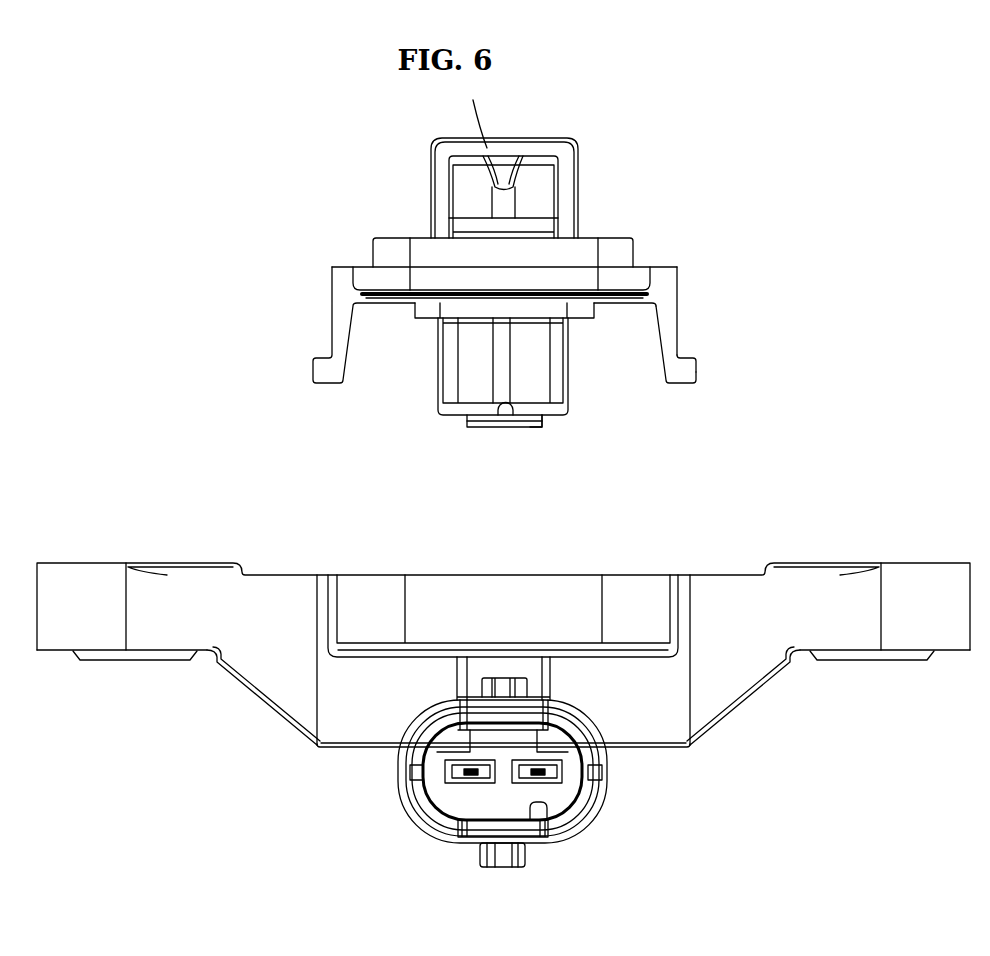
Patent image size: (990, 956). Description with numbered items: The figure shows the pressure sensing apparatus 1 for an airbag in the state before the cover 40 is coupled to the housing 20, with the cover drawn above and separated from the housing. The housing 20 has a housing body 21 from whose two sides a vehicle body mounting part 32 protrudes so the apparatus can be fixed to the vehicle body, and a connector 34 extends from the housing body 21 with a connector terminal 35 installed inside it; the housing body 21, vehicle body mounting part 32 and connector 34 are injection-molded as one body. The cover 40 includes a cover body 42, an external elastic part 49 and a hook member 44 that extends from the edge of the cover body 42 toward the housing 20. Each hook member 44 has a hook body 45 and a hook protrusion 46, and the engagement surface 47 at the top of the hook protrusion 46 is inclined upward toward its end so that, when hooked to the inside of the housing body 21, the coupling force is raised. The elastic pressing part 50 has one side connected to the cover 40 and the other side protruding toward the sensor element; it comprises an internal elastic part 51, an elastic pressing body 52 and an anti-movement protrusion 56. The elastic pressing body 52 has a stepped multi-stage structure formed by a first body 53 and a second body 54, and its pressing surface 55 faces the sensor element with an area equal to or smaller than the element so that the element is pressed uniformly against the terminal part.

The pressure sensing apparatus 1 is at (503, 687).
The housing 20 is at (556, 719).
The housing body 21 is at (665, 758).
The vehicle body mounting part 32 is at (887, 544).
The connector 34 is at (413, 829).
The connector terminal 35 is at (532, 781).
The cover 40 is at (595, 129).
The cover body 42 is at (615, 275).
The hook member 44 is at (569, 370).
The hook body 45 is at (665, 327).
The hook protrusion 46 is at (681, 382).
The engagement surface 47 is at (689, 348).
The external elastic part 49 is at (610, 247).
The elastic pressing part 50 is at (443, 365).
The internal elastic part 51 is at (417, 309).
The elastic pressing body 52 is at (553, 430).
The first body 53 is at (452, 375).
The second body 54 is at (480, 428).
The pressing surface 55 is at (522, 428).
The anti-movement protrusion 56 is at (502, 358).